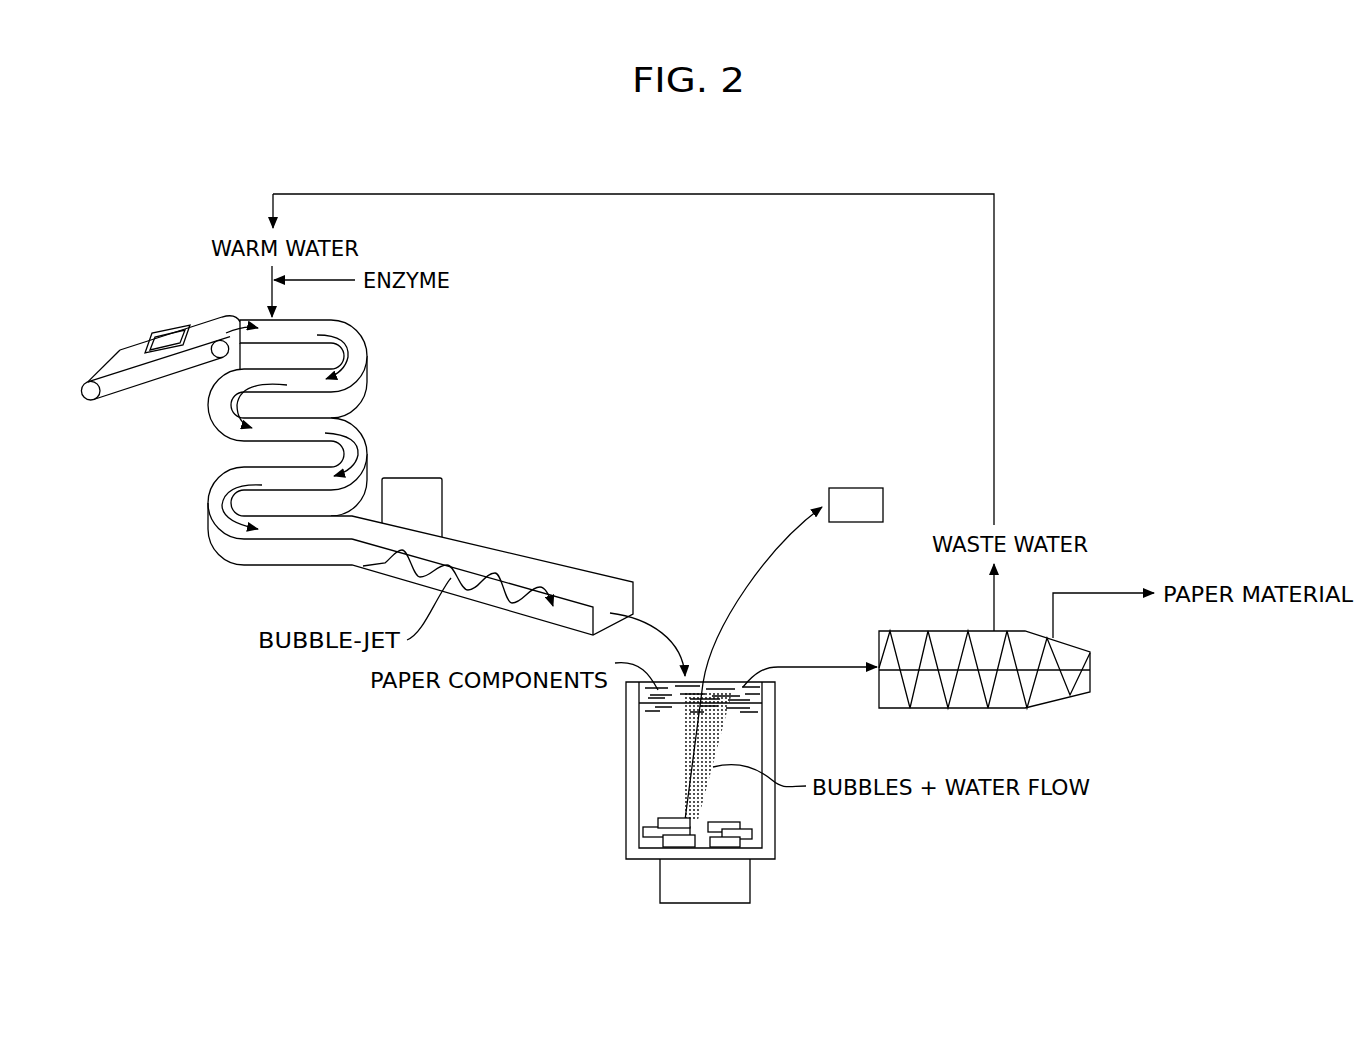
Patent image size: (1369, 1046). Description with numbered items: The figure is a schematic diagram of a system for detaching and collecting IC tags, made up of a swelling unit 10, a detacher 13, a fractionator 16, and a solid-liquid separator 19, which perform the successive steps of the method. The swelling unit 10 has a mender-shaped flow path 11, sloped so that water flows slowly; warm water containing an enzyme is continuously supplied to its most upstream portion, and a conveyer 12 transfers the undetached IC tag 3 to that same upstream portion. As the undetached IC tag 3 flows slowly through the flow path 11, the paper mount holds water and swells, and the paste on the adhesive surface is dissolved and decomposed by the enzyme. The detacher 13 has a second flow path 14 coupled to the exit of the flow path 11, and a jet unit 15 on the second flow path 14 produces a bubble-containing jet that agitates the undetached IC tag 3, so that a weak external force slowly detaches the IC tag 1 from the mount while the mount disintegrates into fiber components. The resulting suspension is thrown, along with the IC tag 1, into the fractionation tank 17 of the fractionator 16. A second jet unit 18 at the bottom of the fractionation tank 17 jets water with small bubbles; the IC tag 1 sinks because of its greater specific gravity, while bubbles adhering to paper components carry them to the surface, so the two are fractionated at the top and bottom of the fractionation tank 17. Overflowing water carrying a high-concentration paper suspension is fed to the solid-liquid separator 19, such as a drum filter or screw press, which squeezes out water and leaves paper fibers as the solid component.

The IC tag 1 is at (855, 488).
The undetached IC tag 3 is at (172, 330).
The swelling unit 10 is at (360, 477).
The mender-shaped flow path 11 is at (218, 432).
The conveyer 12 is at (115, 352).
The detacher 13 is at (499, 545).
The second flow path 14 is at (475, 557).
The jet unit 15 is at (412, 478).
The fractionator 16 is at (642, 683).
The fractionation tank 17 is at (624, 772).
The second jet unit 18 is at (660, 880).
The solid-liquid separator 19 is at (968, 631).